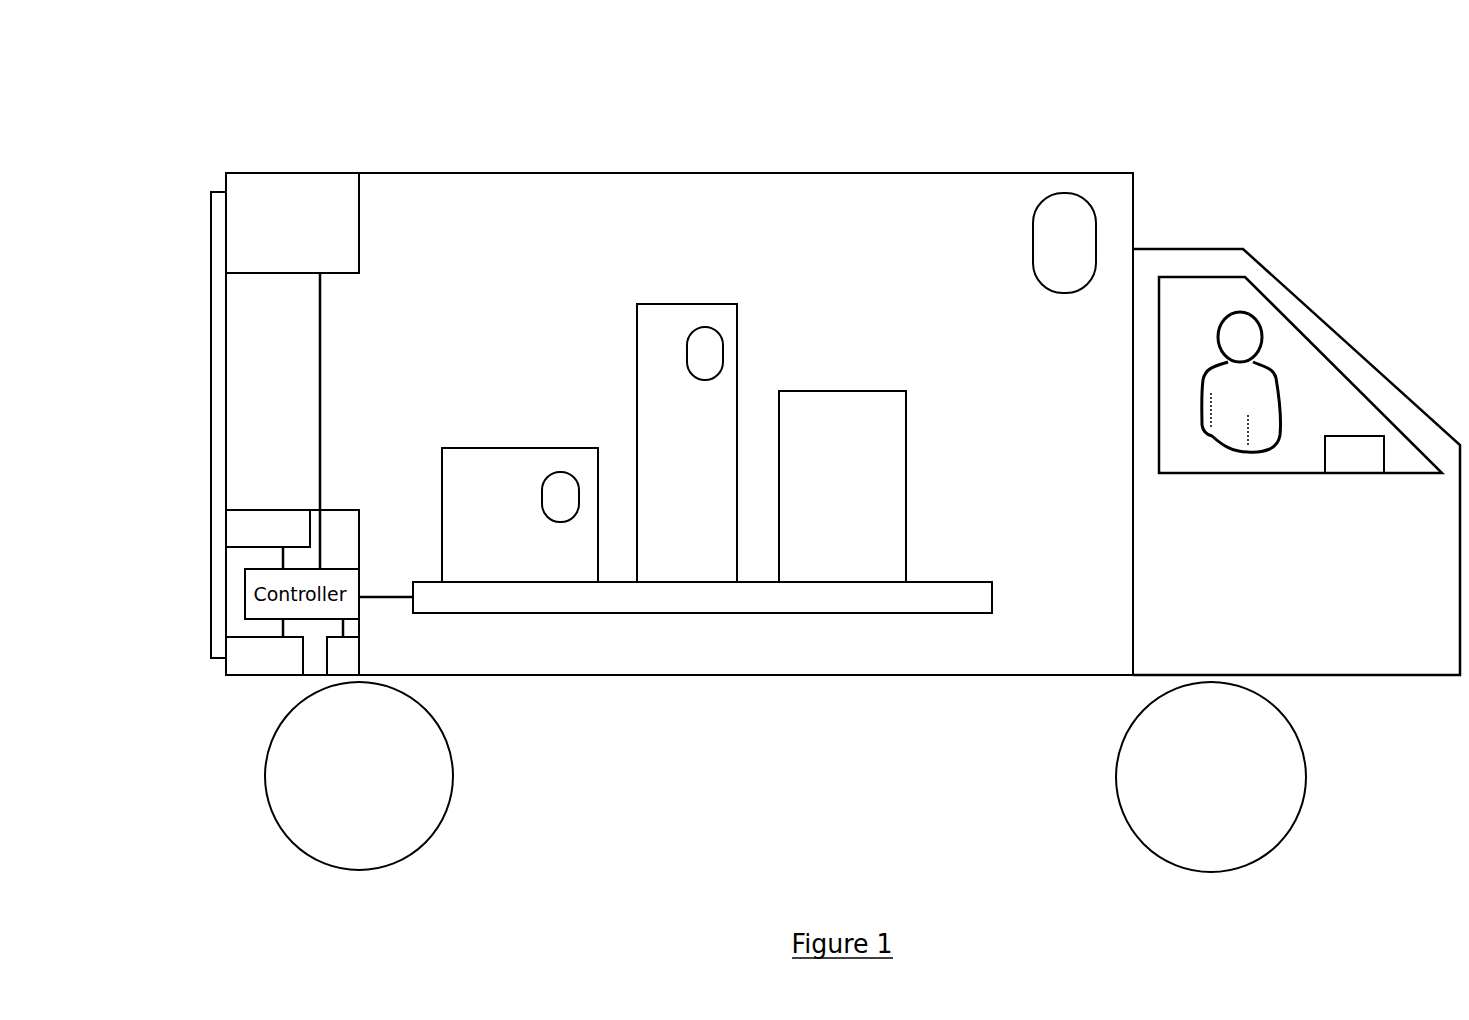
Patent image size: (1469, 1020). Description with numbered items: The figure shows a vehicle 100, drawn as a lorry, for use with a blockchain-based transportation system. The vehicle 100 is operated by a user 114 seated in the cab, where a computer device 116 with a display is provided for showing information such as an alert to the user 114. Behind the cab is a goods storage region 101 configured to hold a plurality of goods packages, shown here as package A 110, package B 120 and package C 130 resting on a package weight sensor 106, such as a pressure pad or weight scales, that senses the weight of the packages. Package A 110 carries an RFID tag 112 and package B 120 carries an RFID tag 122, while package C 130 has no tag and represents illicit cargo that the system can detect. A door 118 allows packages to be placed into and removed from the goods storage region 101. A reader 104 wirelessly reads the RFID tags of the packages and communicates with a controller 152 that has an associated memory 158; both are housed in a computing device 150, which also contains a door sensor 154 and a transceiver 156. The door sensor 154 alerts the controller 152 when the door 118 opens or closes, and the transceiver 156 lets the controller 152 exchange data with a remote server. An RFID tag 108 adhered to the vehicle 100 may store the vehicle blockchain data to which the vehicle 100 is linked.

The vehicle 100 is at (384, 112).
The goods storage region 101 is at (568, 330).
The reader 104 is at (360, 222).
The package weight sensor 106 is at (980, 582).
The RFID tag 108 is at (1062, 295).
The package A 110 is at (486, 448).
The RFID tag 112 is at (557, 473).
The user 114 is at (1265, 453).
The computer device 116 is at (1350, 474).
The door 118 is at (209, 448).
The package B 120 is at (664, 304).
The RFID tag 122 is at (704, 328).
The package C 130 is at (860, 392).
The computing device 150 is at (349, 520).
The controller 152 is at (360, 610).
The door sensor 154 is at (267, 513).
The transceiver 156 is at (240, 677).
The memory 158 is at (352, 664).